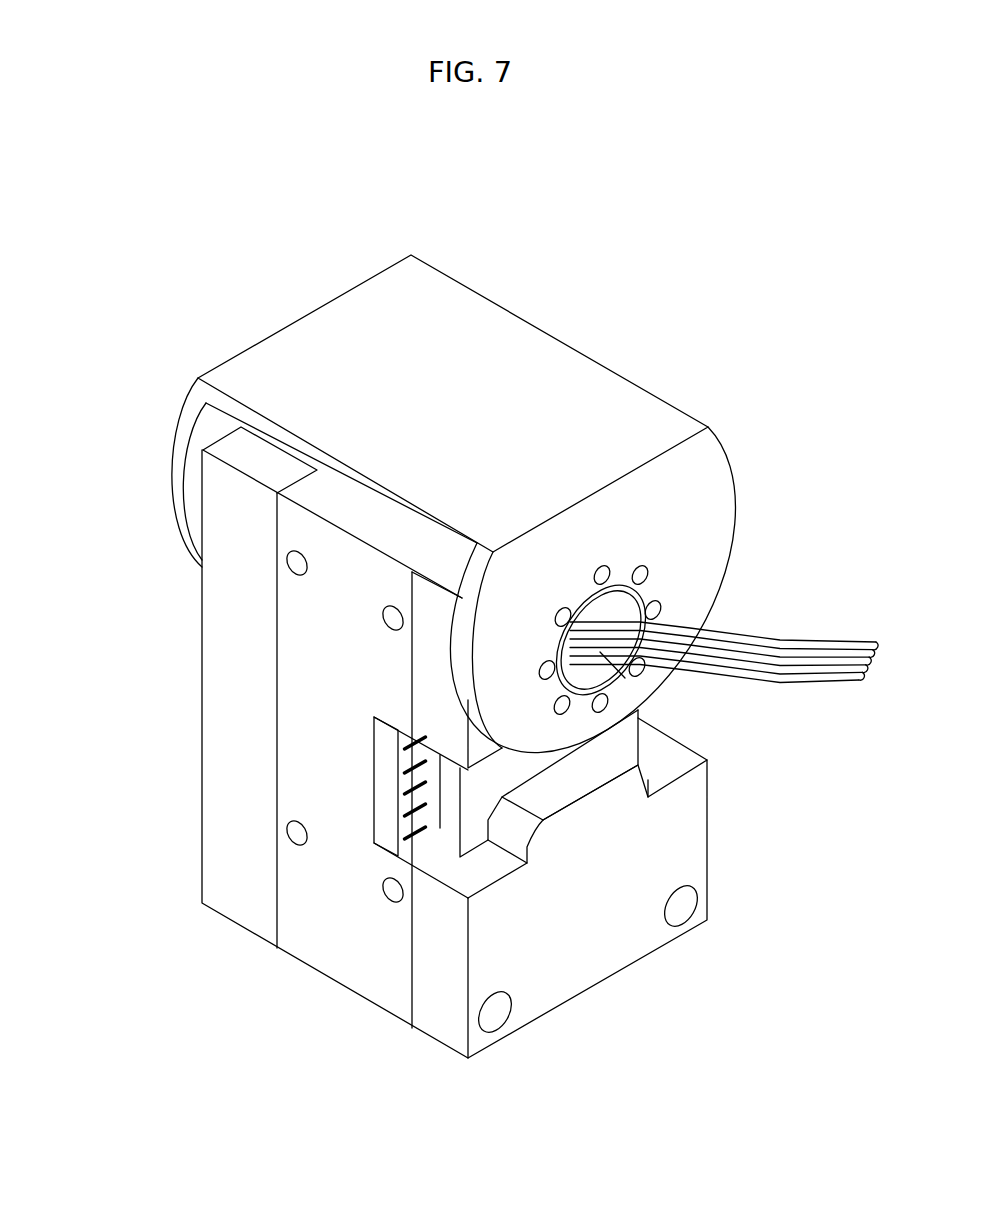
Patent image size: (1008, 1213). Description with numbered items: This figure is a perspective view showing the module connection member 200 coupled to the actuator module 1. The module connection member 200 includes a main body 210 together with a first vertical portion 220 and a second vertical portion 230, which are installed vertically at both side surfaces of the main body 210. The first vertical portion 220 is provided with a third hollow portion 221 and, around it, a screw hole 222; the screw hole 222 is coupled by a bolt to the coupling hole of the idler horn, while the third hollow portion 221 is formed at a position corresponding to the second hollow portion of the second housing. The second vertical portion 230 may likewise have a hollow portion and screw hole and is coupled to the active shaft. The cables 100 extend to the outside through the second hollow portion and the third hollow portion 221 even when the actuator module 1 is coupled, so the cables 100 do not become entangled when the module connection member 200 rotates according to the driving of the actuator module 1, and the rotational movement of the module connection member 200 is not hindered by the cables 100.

The actuator module 1 is at (735, 803).
The cables 100 is at (808, 642).
The module connection member 200 is at (453, 456).
The main body 210 is at (460, 308).
The first vertical portion 220 is at (463, 598).
The third hollow portion 221 is at (593, 668).
The screw hole 222 is at (545, 672).
The second vertical portion 230 is at (182, 447).